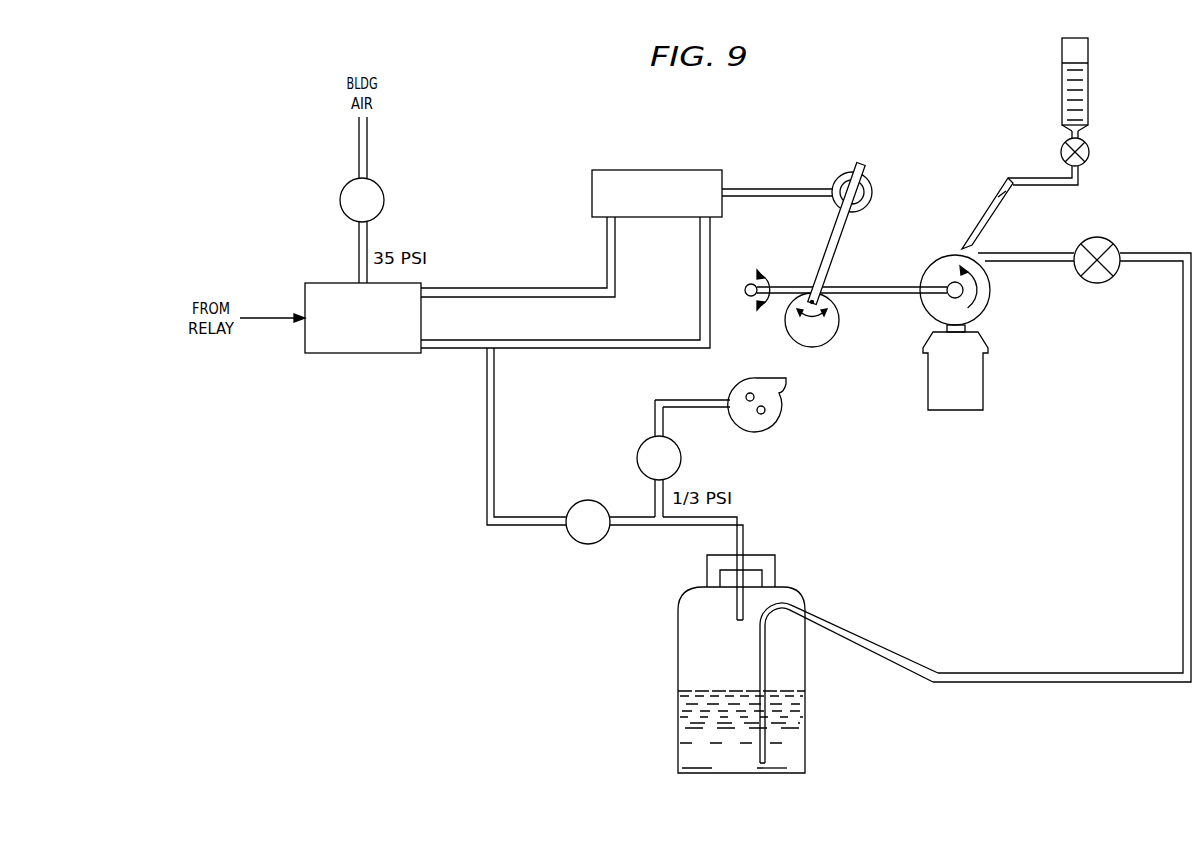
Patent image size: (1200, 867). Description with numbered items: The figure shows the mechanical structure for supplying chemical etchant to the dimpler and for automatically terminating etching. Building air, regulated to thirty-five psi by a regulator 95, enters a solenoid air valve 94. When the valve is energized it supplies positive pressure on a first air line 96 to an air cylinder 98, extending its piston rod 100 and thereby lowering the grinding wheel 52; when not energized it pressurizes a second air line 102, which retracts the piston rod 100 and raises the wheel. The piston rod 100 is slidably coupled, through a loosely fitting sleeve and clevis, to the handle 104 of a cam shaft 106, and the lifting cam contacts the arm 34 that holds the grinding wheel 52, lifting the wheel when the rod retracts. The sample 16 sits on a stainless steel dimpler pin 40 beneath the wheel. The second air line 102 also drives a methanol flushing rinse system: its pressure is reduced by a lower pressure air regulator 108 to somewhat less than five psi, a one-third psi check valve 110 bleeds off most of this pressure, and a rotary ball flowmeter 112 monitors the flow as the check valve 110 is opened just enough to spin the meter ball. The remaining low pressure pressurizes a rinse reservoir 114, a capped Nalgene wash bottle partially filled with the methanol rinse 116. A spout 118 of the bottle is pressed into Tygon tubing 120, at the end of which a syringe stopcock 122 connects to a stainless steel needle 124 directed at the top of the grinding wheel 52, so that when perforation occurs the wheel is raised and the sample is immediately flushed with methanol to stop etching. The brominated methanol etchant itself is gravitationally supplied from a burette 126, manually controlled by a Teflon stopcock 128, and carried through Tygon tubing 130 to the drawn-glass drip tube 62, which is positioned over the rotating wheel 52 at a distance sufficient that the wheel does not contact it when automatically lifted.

The solenoid air valve 94 is at (323, 283).
The regulator 95 is at (378, 186).
The first air line 96 is at (478, 288).
The air cylinder 98 is at (664, 170).
The piston rod 100 is at (762, 189).
The second air line 102 is at (458, 340).
The handle 104 is at (840, 238).
The arm 34 is at (876, 296).
The cam shaft 106 is at (788, 330).
The grinding wheel 52 is at (988, 283).
The sample 16 is at (978, 331).
The dimpler pin 40 is at (988, 380).
The drip tube 62 is at (991, 206).
The Tygon tubing 130 is at (1030, 178).
The Teflon stopcock 128 is at (1089, 152).
The burette 126 is at (1089, 82).
The stainless steel needle 124 is at (1036, 253).
The syringe stopcock 122 is at (1112, 242).
The Tygon tubing 120 is at (1018, 673).
The lower pressure air regulator 108 is at (586, 501).
The check valve 110 is at (640, 447).
The rotary ball flowmeter 112 is at (780, 414).
The rinse reservoir 114 is at (798, 650).
The methanol rinse 116 is at (800, 723).
The spout 118 is at (821, 612).